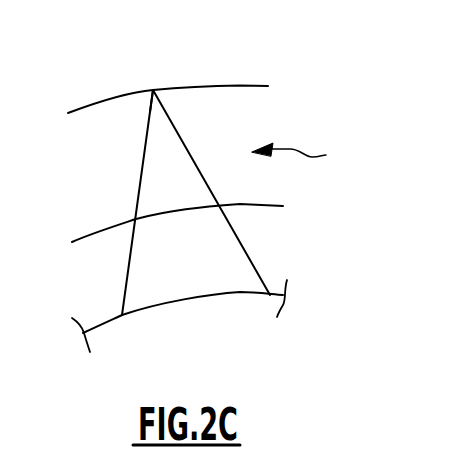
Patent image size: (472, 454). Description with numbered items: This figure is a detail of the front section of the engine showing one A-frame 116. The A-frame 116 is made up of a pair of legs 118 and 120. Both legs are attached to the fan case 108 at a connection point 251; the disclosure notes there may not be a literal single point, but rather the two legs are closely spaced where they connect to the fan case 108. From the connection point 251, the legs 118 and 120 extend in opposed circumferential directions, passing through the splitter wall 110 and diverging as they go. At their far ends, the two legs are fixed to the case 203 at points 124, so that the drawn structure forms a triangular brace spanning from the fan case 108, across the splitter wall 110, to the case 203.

The fan case 108 is at (213, 88).
The splitter wall 110 is at (93, 233).
The A-frame 116 is at (310, 157).
The leg 118 is at (143, 165).
The leg 120 is at (188, 150).
The points 124 is at (123, 317).
The case 203 is at (223, 295).
The connection point 251 is at (153, 90).